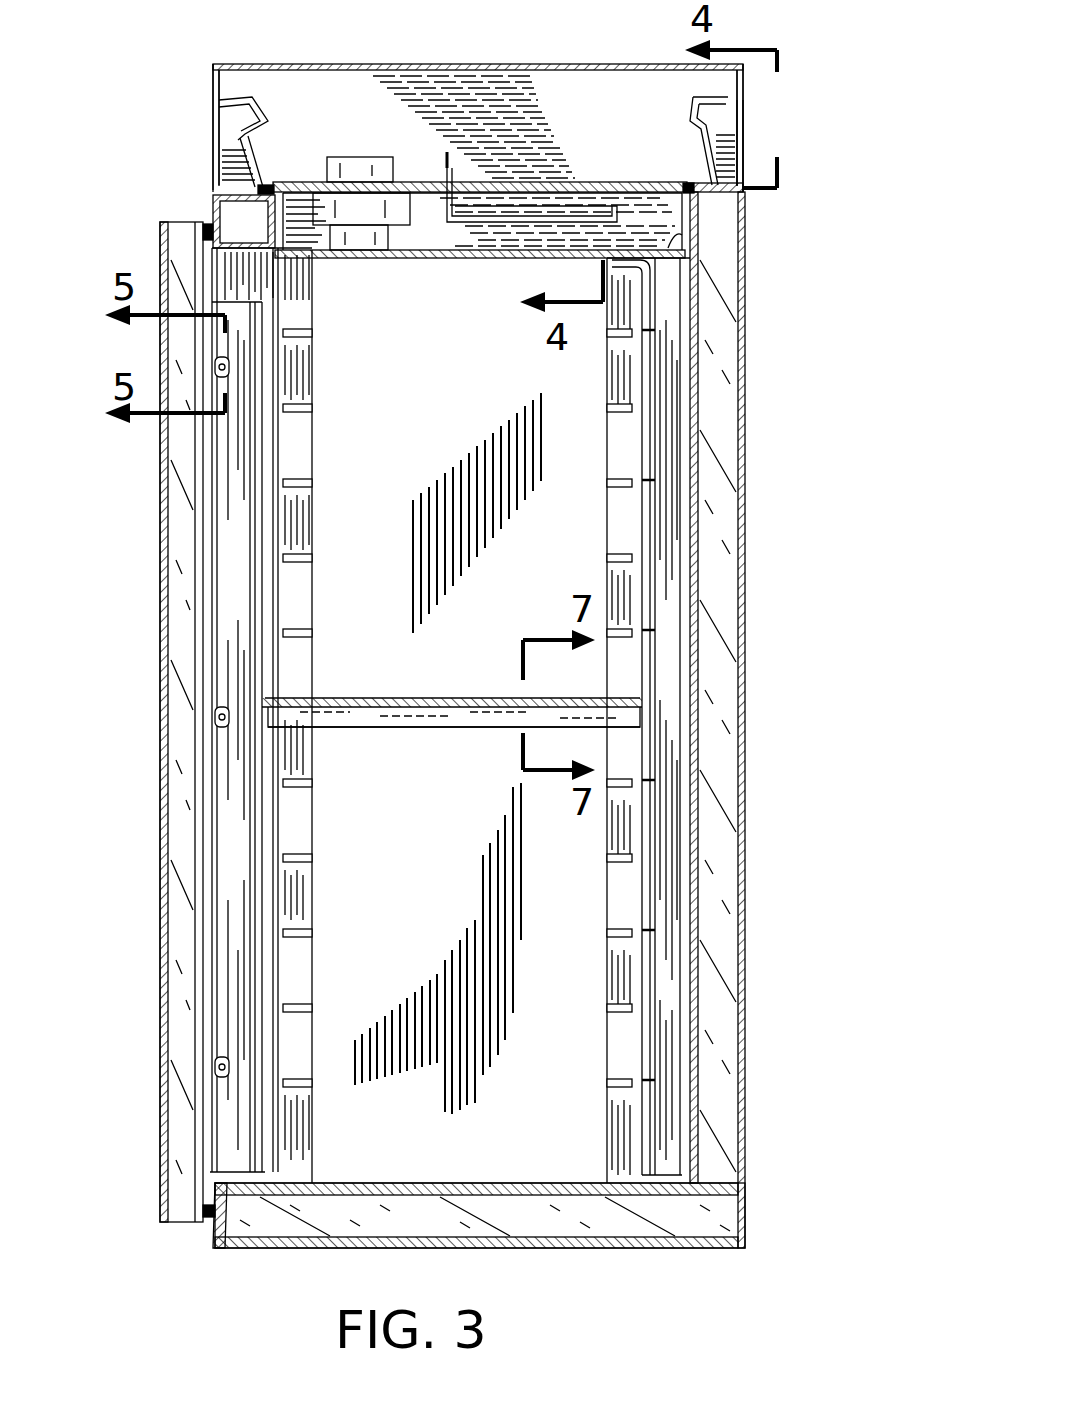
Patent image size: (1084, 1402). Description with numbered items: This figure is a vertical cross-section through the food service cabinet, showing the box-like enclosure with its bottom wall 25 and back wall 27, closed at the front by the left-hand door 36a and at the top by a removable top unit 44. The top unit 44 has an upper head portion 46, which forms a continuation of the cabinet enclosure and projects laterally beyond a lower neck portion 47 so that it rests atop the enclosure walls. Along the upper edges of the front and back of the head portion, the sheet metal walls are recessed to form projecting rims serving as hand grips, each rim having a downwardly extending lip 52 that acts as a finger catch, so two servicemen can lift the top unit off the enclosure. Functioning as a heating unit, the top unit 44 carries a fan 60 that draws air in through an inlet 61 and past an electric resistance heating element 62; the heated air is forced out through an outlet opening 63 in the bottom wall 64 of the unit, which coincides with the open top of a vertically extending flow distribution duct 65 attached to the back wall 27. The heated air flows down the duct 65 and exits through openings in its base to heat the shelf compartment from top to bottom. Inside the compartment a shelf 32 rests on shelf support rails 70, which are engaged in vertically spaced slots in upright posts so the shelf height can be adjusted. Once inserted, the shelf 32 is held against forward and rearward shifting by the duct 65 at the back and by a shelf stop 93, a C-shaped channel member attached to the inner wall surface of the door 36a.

The top unit 44 is at (442, 60).
The downwardly extending lip 52 is at (238, 122).
The head portion 46 is at (752, 150).
The neck portion 47 is at (458, 265).
The electric resistance heating element 62 is at (600, 218).
The outlet opening 63 is at (670, 247).
The bottom wall 64 is at (548, 260).
The fan 60 is at (375, 156).
The inlet 61 is at (405, 258).
The back wall 27 is at (746, 490).
The bottom wall 25 is at (470, 1184).
The left-hand door 36a is at (160, 690).
The shelf stop 93 is at (272, 1052).
The flow distribution duct 65 is at (632, 462).
The shelf 32 is at (376, 698).
The shelf support rail 70 is at (435, 735).